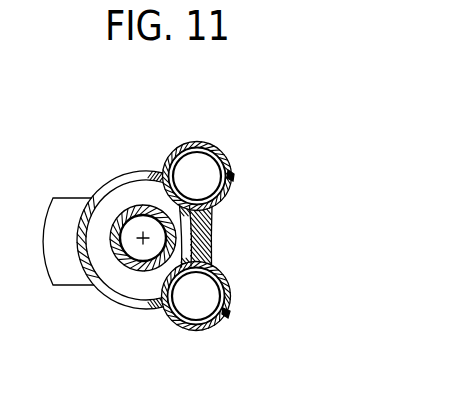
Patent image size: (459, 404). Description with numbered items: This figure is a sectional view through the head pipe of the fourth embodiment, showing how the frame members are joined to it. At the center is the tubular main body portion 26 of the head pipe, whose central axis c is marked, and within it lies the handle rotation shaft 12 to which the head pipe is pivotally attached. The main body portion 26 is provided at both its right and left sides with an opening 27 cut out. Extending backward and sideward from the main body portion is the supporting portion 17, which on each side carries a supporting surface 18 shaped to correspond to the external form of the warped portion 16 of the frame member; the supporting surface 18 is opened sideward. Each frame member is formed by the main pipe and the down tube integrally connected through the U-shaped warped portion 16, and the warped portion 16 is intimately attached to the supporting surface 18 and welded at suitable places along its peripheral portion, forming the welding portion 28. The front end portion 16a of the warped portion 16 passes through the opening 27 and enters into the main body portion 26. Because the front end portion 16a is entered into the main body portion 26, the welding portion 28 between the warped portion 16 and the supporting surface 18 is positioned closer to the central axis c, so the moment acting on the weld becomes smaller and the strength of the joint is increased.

The handle rotation shaft 12 is at (140, 274).
The warped portion 16 is at (183, 142).
The front end portion 16a is at (158, 188).
The supporting portion 17 is at (211, 253).
The supporting surface 18 is at (226, 204).
The main body portion 26 is at (84, 198).
The opening 27 is at (128, 172).
The welding portion 28 is at (232, 173).
The central axis C is at (143, 238).